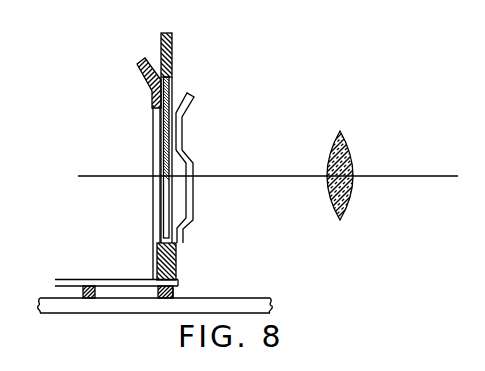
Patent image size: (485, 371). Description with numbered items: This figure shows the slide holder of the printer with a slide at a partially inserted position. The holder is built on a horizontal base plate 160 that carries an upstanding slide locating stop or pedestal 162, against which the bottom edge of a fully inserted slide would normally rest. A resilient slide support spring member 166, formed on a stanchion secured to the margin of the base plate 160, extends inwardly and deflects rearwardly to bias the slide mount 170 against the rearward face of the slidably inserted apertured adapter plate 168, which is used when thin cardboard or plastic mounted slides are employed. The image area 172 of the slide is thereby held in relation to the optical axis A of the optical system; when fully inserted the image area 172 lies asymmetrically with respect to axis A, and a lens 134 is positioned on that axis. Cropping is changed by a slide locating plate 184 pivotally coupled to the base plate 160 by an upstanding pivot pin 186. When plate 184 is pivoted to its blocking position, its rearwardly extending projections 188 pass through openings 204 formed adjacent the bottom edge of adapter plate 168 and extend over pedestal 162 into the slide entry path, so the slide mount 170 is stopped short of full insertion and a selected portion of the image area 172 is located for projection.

The optical axis A is at (285, 176).
The lens 134 is at (349, 153).
The base plate 160 is at (250, 298).
The slide locating stop or pedestal 162 is at (176, 291).
The resilient slide support spring member 166 is at (189, 104).
The apertured adapter plate 168 is at (152, 106).
The slide mount 170 is at (170, 53).
The image area 172 is at (166, 203).
The slide locating plate 184 is at (96, 259).
The pivot pin 186 is at (86, 298).
The projections 188 is at (179, 282).
The openings 204 is at (157, 277).